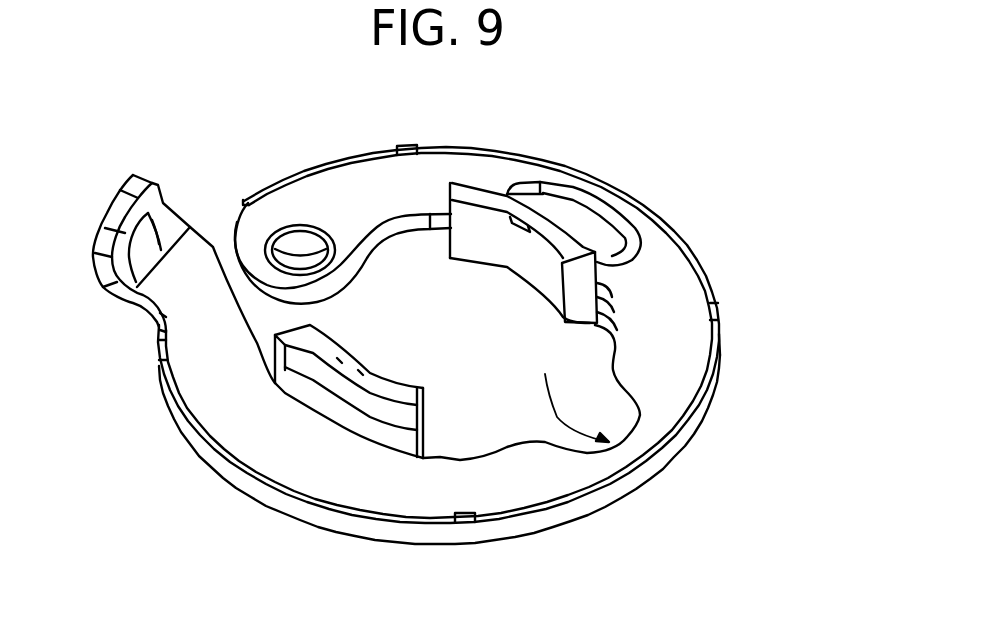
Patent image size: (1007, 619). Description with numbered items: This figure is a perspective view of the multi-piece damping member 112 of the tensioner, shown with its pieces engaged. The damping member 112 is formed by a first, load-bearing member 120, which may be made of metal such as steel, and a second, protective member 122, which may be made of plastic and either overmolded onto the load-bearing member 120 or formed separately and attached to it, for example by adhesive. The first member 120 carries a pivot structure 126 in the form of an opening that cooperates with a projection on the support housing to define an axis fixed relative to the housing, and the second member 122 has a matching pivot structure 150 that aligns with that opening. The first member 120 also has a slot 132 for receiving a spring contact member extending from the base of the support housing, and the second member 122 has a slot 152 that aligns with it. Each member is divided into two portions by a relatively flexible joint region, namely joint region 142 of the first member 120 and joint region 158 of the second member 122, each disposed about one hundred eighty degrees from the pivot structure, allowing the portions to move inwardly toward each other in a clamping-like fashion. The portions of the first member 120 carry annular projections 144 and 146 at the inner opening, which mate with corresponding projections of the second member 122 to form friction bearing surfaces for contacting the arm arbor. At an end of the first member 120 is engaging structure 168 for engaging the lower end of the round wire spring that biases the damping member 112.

The damping member 112 is at (195, 165).
The first, load-bearing member 120 is at (663, 272).
The second, protective member 122 is at (650, 472).
The pivot structure 126 is at (300, 250).
The pivot structure 150 is at (300, 253).
The slot 132 is at (574, 224).
The slot 152 is at (590, 223).
The joint region 142 is at (531, 392).
The joint region 158 is at (545, 374).
The annular projection 144 is at (342, 395).
The annular projection 146 is at (472, 197).
The engaging structure 168 is at (103, 288).